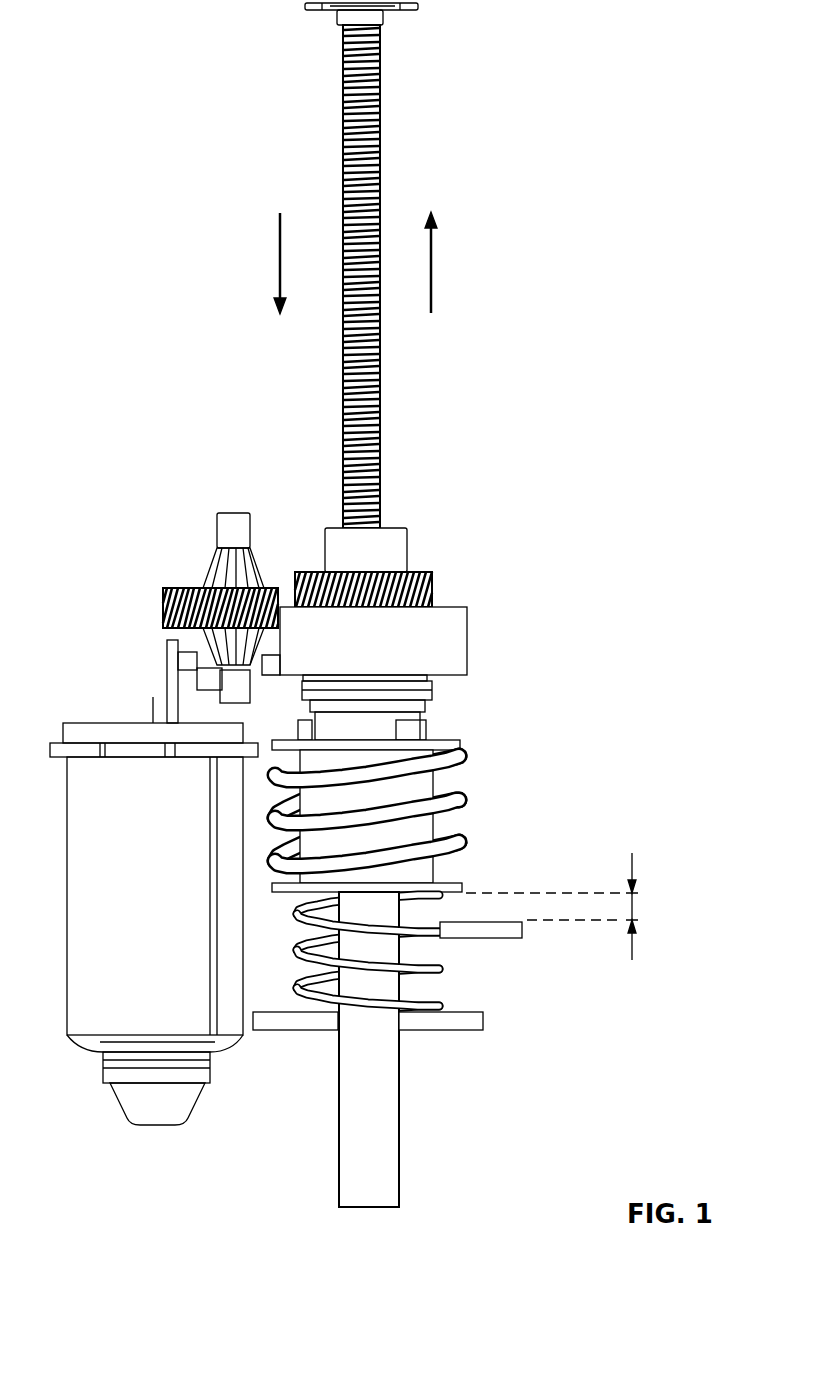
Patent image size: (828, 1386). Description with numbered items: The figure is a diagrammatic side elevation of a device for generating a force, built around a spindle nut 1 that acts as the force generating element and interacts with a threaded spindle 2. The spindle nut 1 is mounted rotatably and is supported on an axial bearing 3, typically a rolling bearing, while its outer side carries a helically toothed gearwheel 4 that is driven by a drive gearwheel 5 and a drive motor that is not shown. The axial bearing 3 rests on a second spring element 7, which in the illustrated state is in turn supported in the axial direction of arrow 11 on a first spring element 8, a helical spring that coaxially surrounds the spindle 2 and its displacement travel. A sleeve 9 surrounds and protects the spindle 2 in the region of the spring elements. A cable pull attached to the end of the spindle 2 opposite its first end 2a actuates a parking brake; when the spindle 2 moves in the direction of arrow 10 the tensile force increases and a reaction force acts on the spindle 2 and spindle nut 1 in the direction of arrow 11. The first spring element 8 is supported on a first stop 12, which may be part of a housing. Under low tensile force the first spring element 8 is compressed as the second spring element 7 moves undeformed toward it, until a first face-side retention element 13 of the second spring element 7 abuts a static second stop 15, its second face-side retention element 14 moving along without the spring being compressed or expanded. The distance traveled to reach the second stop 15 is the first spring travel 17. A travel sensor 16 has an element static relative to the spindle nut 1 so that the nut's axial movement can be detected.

The spindle nut 1 is at (407, 548).
The spindle 2 is at (380, 447).
The first end 2a is at (384, 27).
The axial bearing 3 is at (430, 697).
The helically toothed gearwheel 4 is at (432, 585).
The drive gearwheel 5 is at (170, 607).
The second spring element 7 is at (472, 803).
The first spring element 8 is at (433, 1049).
The sleeve 9 is at (399, 1095).
The arrow 10 is at (431, 265).
The arrow 11 is at (280, 265).
The first stop 12 is at (483, 1022).
The first face-side retention element 13 is at (465, 888).
The second face-side retention element 14 is at (463, 748).
The second stop 15 is at (522, 930).
The travel sensor 16 is at (178, 657).
The first spring travel 17 is at (634, 908).